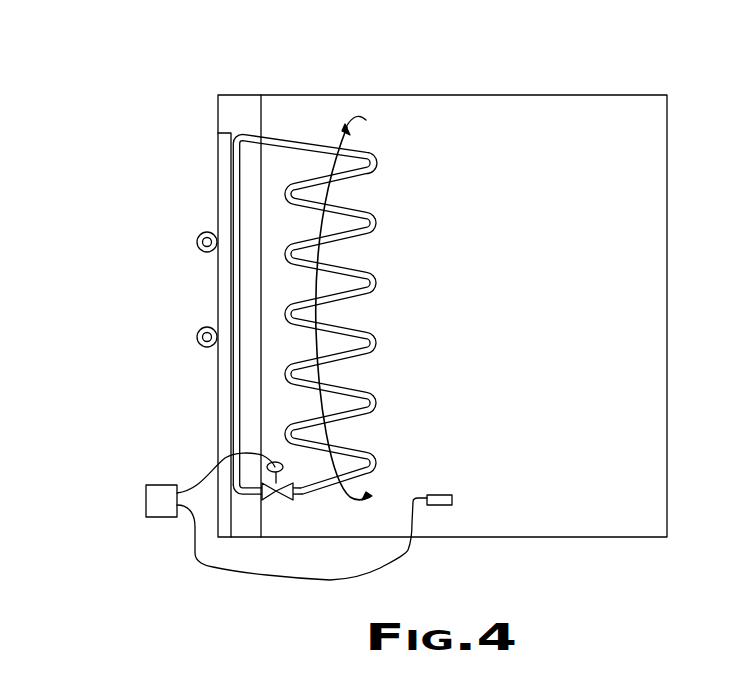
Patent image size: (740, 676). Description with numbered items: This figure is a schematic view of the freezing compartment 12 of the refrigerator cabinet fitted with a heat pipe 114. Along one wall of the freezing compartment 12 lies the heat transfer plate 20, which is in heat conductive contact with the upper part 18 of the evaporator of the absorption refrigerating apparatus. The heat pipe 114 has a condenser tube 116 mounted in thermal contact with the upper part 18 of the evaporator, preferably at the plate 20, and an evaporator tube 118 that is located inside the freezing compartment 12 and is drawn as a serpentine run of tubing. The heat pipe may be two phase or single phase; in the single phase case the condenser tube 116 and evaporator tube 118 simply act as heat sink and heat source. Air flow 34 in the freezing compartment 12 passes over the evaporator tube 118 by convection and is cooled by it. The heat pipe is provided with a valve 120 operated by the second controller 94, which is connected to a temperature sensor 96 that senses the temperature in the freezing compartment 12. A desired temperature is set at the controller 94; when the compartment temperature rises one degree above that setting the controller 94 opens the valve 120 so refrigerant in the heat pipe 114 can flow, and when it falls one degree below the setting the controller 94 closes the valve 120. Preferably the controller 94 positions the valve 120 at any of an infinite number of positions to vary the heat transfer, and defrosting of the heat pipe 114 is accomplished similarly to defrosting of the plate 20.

The freezing compartment 12 is at (594, 401).
The upper part of the evaporator 18 is at (207, 232).
The heat transfer plate 20 is at (218, 400).
The air circulation 34 is at (373, 131).
The second controller 94 is at (146, 487).
The temperature sensor 96 is at (443, 494).
The heat pipe 114 is at (372, 308).
The condenser tube 116 is at (237, 303).
The evaporator tube 118 is at (358, 332).
The valve 120 is at (278, 500).